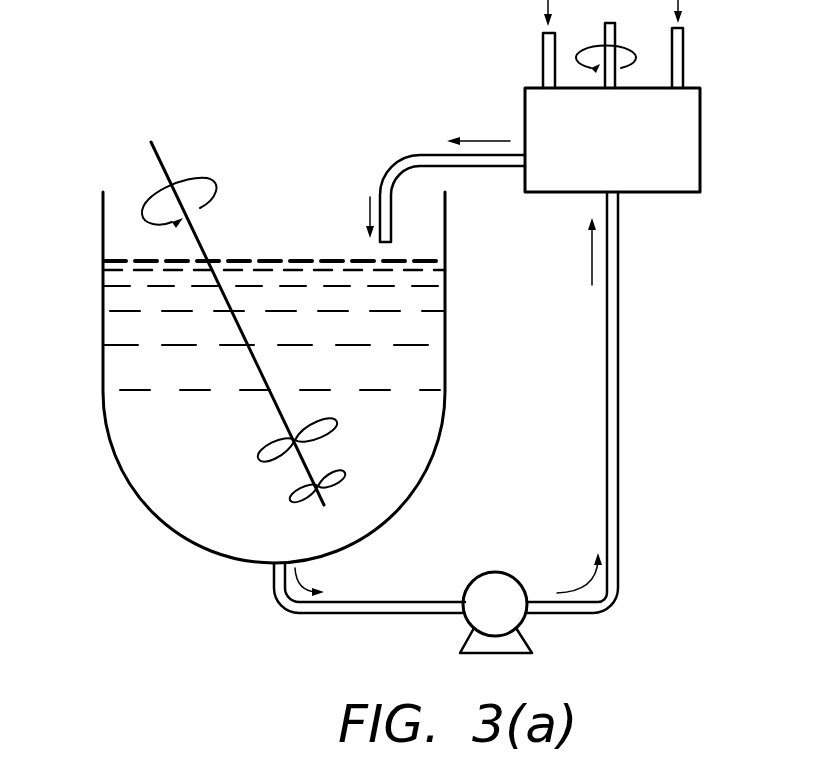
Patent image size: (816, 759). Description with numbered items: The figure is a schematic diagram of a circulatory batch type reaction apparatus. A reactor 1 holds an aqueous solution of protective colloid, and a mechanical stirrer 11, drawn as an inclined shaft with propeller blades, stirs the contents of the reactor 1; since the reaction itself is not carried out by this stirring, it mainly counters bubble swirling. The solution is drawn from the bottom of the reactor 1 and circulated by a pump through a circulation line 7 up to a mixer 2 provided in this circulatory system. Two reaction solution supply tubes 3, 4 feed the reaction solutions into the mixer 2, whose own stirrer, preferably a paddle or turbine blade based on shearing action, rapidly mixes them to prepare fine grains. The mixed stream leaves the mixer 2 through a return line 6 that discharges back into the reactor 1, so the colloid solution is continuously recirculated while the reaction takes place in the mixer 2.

The reactor 1 is at (103, 393).
The mixer 2 is at (700, 131).
The reaction solution supply tube 3 is at (543, 60).
The reaction solution supply tube 4 is at (683, 61).
The outlet pipe to tank 6 is at (421, 155).
The circulation pipe with pump 7 is at (618, 313).
The mechanical stirrer 11 is at (290, 468).